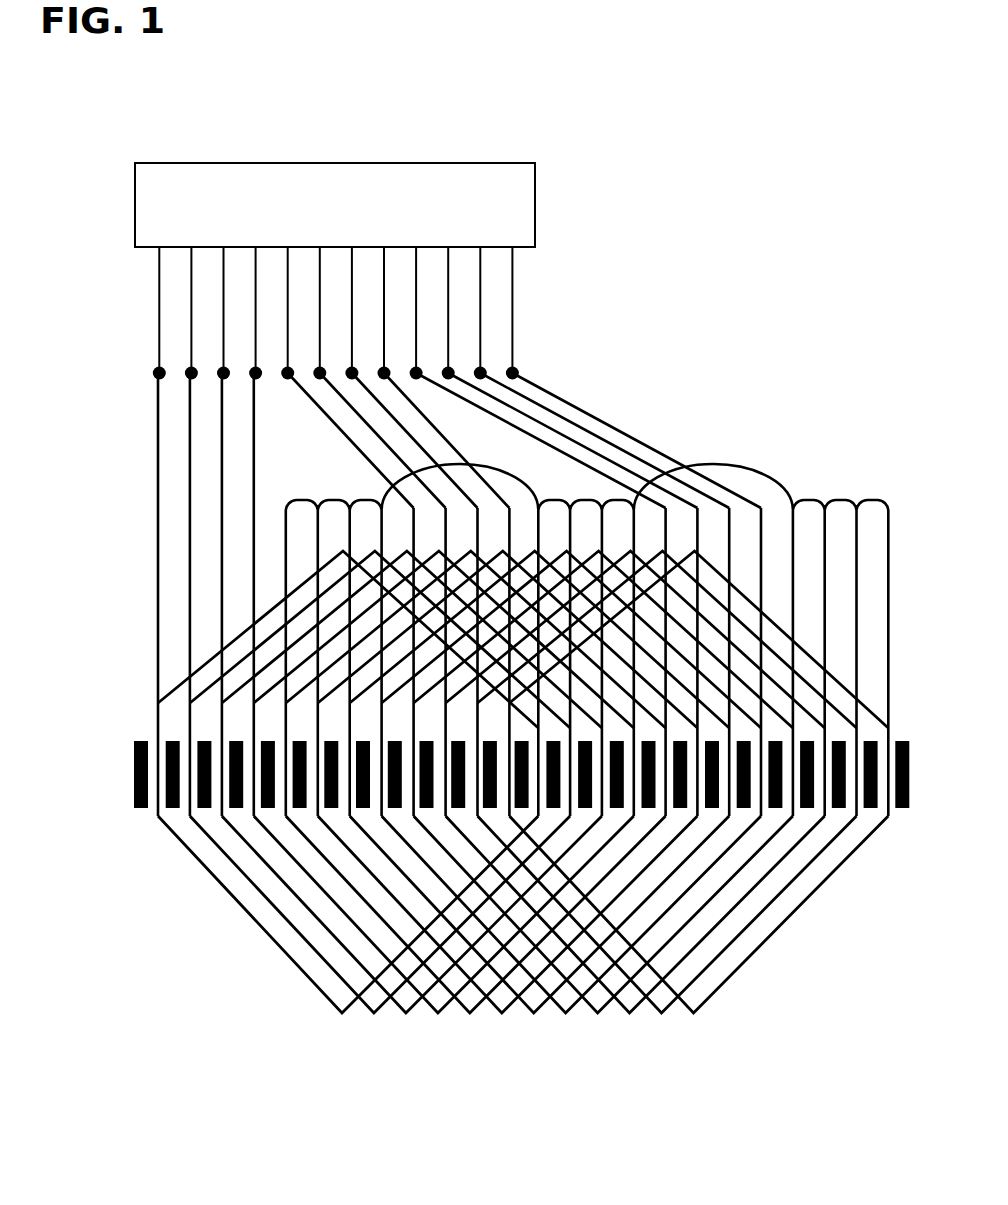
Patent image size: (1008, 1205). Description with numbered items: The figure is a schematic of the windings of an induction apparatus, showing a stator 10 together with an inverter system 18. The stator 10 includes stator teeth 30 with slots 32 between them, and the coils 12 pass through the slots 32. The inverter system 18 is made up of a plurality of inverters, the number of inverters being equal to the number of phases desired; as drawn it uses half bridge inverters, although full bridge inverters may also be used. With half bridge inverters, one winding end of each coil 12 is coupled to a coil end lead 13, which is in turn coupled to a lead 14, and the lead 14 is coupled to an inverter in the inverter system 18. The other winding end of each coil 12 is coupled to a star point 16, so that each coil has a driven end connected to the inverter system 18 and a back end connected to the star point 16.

The stator 10 is at (133, 752).
The coils 12 is at (267, 936).
The coil end lead 13 is at (157, 427).
The lead 14 is at (157, 319).
The star point 16 is at (876, 498).
The inverter system 18 is at (536, 180).
The stator teeth 30 is at (161, 808).
The slots 32 is at (197, 828).